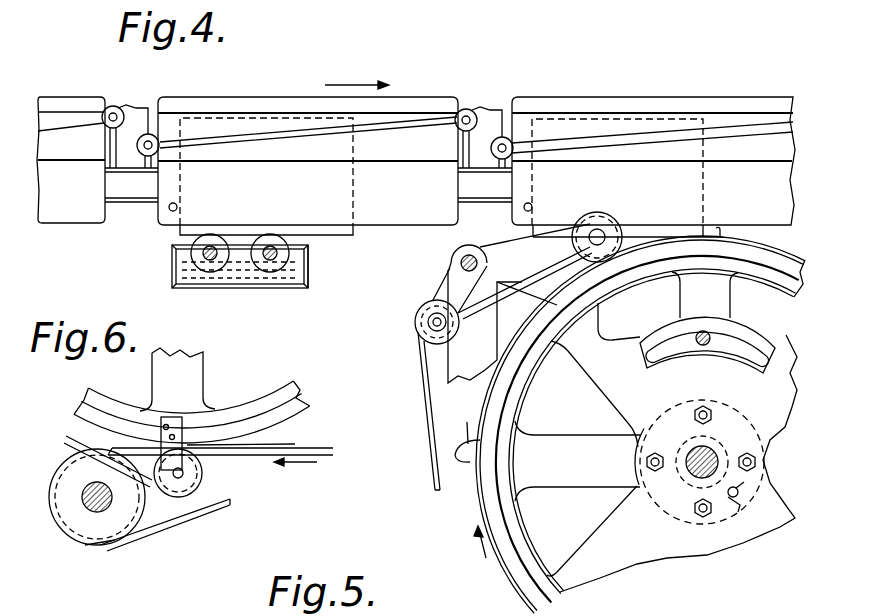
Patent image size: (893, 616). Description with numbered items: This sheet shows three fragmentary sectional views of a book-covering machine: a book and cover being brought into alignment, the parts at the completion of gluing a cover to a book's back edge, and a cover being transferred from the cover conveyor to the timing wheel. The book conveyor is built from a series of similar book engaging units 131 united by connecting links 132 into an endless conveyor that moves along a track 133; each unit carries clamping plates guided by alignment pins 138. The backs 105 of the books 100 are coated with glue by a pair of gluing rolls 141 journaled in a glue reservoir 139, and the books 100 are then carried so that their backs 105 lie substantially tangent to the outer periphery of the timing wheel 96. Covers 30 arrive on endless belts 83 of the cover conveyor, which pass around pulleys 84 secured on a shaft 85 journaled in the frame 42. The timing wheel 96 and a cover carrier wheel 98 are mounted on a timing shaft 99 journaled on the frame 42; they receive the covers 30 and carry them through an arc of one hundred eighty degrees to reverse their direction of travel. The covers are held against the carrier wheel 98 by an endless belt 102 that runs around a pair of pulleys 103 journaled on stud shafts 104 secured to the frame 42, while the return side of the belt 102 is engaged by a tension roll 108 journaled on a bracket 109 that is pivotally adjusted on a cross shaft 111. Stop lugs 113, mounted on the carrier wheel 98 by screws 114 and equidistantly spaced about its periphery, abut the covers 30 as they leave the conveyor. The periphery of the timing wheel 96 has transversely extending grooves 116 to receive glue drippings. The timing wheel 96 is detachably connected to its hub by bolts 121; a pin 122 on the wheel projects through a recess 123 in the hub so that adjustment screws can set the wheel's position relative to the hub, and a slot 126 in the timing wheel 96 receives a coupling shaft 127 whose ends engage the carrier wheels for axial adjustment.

In FIG. 5, the cover 30 is at (645, 238).
In FIG. 6, the cover 30 is at (285, 443).
In FIG. 5, the frame 42 is at (452, 362).
In FIG. 6, the endless belt 83 is at (201, 502).
In FIG. 6, the pulley 84 is at (103, 528).
In FIG. 6, the shaft 85 is at (88, 507).
In FIG. 5, the timing wheel 96 is at (648, 560).
In FIG. 5, the cover carrier wheel 98 is at (683, 301).
In FIG. 6, the cover carrier wheel 98 is at (308, 398).
In FIG. 5, the timing shaft 99 is at (700, 464).
In FIG. 4, the book 100 is at (337, 235).
In FIG. 5, the book 100 is at (688, 232).
In FIG. 5, the endless belt 102 is at (427, 440).
In FIG. 6, the endless belt 102 is at (72, 438).
In FIG. 5, the pulley 103 is at (604, 215).
In FIG. 6, the pulley 103 is at (192, 471).
In FIG. 5, the stud shaft 104 is at (612, 230).
In FIG. 6, the stud shaft 104 is at (185, 479).
In FIG. 4, the back 105 is at (330, 256).
In FIG. 5, the tension roll 108 is at (418, 336).
In FIG. 5, the bracket 109 is at (445, 289).
In FIG. 5, the cross shaft 111 is at (460, 262).
In FIG. 5, the stop lug 113 is at (723, 233).
In FIG. 6, the stop lug 113 is at (176, 424).
In FIG. 6, the screw 114 is at (182, 433).
In FIG. 5, the groove 116 is at (545, 306).
In FIG. 5, the bolt 121 is at (712, 418).
In FIG. 5, the pin 122 is at (742, 495).
In FIG. 5, the recess 123 is at (740, 488).
In FIG. 5, the slot 126 is at (748, 340).
In FIG. 5, the coupling shaft 127 is at (700, 346).
In FIG. 4, the book engaging unit 131 is at (313, 197).
In FIG. 4, the connecting link 132 is at (368, 128).
In FIG. 4, the track 133 is at (137, 192).
In FIG. 4, the alignment pin 138 is at (177, 205).
In FIG. 4, the glue reservoir 139 is at (172, 267).
In FIG. 4, the gluing roll 141 is at (268, 272).